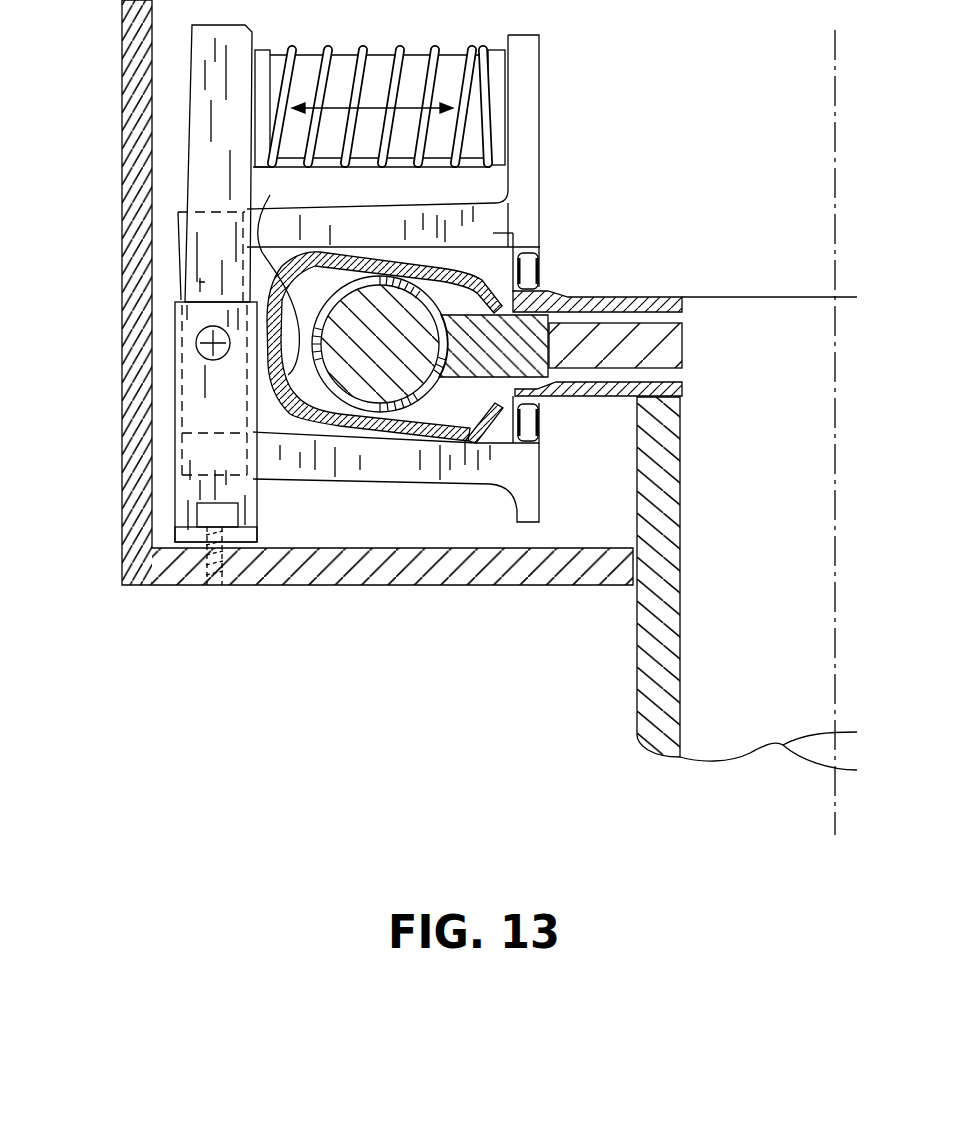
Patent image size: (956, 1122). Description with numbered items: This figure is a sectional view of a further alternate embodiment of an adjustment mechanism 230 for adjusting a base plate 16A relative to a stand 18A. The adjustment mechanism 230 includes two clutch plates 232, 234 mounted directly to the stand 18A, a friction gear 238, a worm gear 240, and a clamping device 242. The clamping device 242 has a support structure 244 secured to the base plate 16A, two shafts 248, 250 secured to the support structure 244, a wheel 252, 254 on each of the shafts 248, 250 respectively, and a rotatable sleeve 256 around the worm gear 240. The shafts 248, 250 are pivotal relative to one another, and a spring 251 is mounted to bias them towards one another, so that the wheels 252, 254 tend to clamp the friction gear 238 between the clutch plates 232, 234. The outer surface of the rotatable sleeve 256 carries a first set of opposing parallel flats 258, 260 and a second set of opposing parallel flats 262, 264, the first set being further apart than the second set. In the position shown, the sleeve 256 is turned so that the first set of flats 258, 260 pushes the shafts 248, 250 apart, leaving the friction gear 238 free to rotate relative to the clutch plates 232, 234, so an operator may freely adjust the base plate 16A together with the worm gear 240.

The base plate 16A is at (122, 432).
The stand 18A is at (637, 668).
The adjustment mechanism 230 is at (366, 546).
The clutch plate 232 is at (600, 297).
The clutch plate 234 is at (608, 397).
The friction gear 238 is at (477, 297).
The worm gear 240 is at (432, 388).
The clamping device 242 is at (398, 500).
The support structure 244 is at (245, 503).
The shaft 248 is at (423, 203).
The shaft 250 is at (425, 368).
The spring 251 is at (388, 48).
The wheel 252 is at (538, 282).
The wheel 254 is at (542, 406).
The rotatable sleeve 256 is at (93, 272).
The flat 258 is at (322, 262).
The flat 260 is at (424, 462).
The flat 262 is at (448, 273).
The flat 264 is at (330, 440).